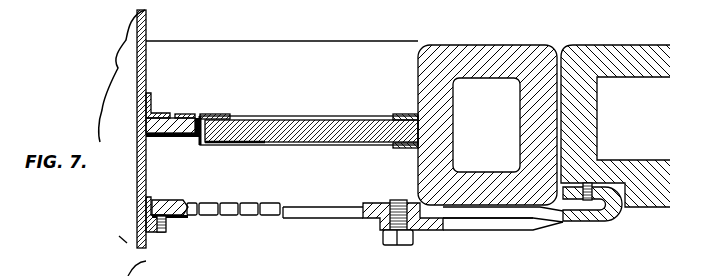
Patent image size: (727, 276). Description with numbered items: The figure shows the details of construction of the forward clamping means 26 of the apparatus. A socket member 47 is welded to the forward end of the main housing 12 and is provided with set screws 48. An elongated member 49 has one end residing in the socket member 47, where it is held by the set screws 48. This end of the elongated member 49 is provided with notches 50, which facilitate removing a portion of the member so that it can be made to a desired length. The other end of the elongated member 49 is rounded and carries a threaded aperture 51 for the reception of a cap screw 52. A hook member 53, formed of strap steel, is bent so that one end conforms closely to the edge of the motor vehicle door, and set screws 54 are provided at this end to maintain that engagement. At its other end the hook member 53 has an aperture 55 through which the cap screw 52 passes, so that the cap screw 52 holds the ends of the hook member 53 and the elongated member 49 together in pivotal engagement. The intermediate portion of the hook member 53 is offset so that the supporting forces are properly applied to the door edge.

The main housing 12 is at (146, 170).
The forward clamping means 26 is at (313, 205).
The socket member 47 is at (177, 200).
The set screws 48 is at (163, 232).
The elongated member 49 is at (288, 203).
The notches 50 is at (258, 203).
The threaded aperture 51 is at (395, 200).
The cap screw 52 is at (412, 238).
The hook member 53 is at (598, 222).
The set screws 54 is at (591, 190).
The aperture 55 is at (383, 226).